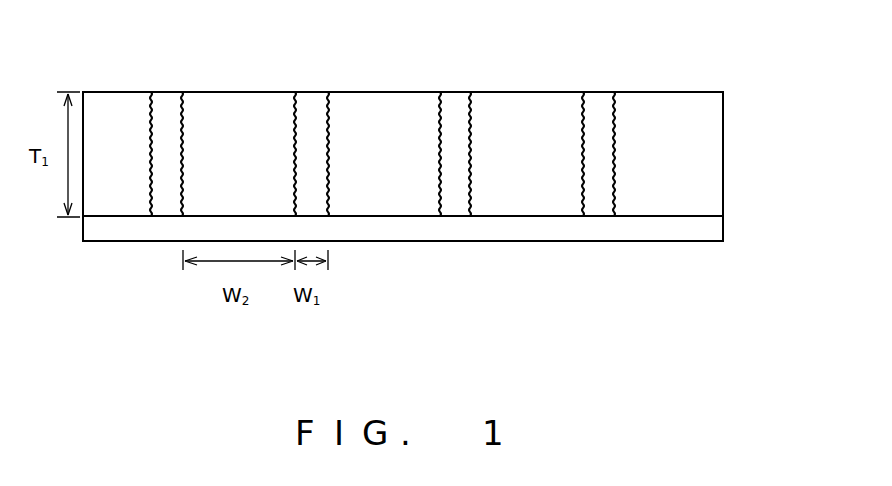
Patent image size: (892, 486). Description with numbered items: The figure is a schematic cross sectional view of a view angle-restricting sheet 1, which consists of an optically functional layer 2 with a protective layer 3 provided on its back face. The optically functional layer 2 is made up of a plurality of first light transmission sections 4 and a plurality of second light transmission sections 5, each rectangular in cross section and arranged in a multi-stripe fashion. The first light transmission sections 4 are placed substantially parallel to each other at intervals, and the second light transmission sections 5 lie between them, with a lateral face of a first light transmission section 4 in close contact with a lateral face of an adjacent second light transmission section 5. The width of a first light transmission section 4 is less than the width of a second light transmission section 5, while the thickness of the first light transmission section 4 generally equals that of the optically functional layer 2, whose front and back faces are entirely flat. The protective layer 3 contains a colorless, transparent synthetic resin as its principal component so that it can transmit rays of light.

The view angle-restricting sheet 1 is at (436, 131).
The optically functional layer 2 is at (436, 124).
The protective layer 3 is at (718, 229).
The first light transmission section 4 is at (455, 108).
The second light transmission section 5 is at (375, 108).